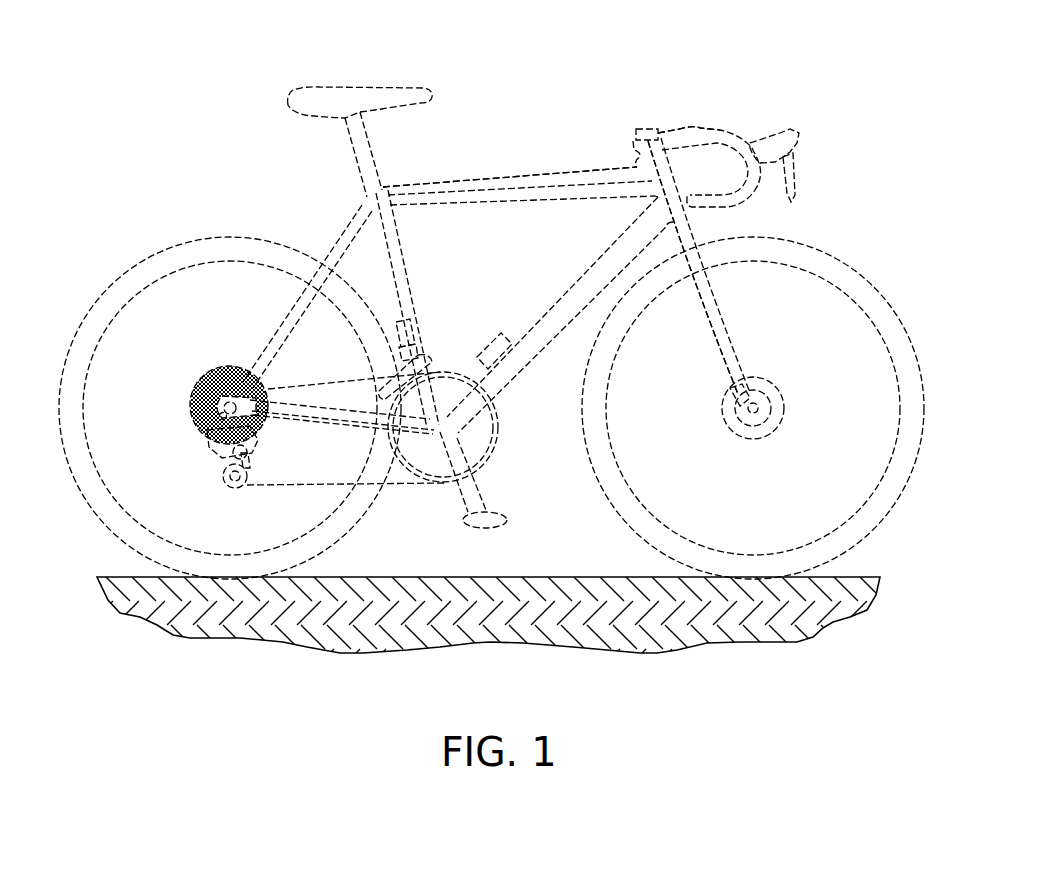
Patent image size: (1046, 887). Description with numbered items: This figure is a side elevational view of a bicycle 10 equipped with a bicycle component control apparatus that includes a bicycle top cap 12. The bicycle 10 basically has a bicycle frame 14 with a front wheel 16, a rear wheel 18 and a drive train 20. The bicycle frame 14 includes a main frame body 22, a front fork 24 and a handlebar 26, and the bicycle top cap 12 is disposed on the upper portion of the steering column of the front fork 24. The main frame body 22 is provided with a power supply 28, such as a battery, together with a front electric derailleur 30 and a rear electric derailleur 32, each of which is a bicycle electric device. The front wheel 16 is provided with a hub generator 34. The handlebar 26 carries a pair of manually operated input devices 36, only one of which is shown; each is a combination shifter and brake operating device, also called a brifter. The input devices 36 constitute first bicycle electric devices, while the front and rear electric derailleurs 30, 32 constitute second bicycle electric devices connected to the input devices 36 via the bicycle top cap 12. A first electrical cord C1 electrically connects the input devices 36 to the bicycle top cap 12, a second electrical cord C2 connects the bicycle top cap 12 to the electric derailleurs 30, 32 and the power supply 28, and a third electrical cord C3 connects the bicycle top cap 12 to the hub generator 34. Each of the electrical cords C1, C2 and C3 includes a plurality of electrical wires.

The bicycle 10 is at (718, 57).
The bicycle top cap 12 is at (645, 114).
The bicycle frame 14 is at (478, 176).
The front wheel 16 is at (859, 270).
The rear wheel 18 is at (140, 261).
The drive train 20 is at (398, 505).
The main frame body 22 is at (506, 198).
The front fork 24 is at (722, 313).
The handlebar 26 is at (738, 128).
The power supply 28 is at (492, 334).
The front electric derailleur 30 is at (420, 320).
The rear electric derailleur 32 is at (228, 488).
The hub generator 34 is at (783, 439).
The manually operated input devices 36 is at (798, 124).
The first electrical cord C1 is at (681, 131).
The second electrical cord C2 is at (557, 178).
The third electrical cord C3 is at (718, 350).